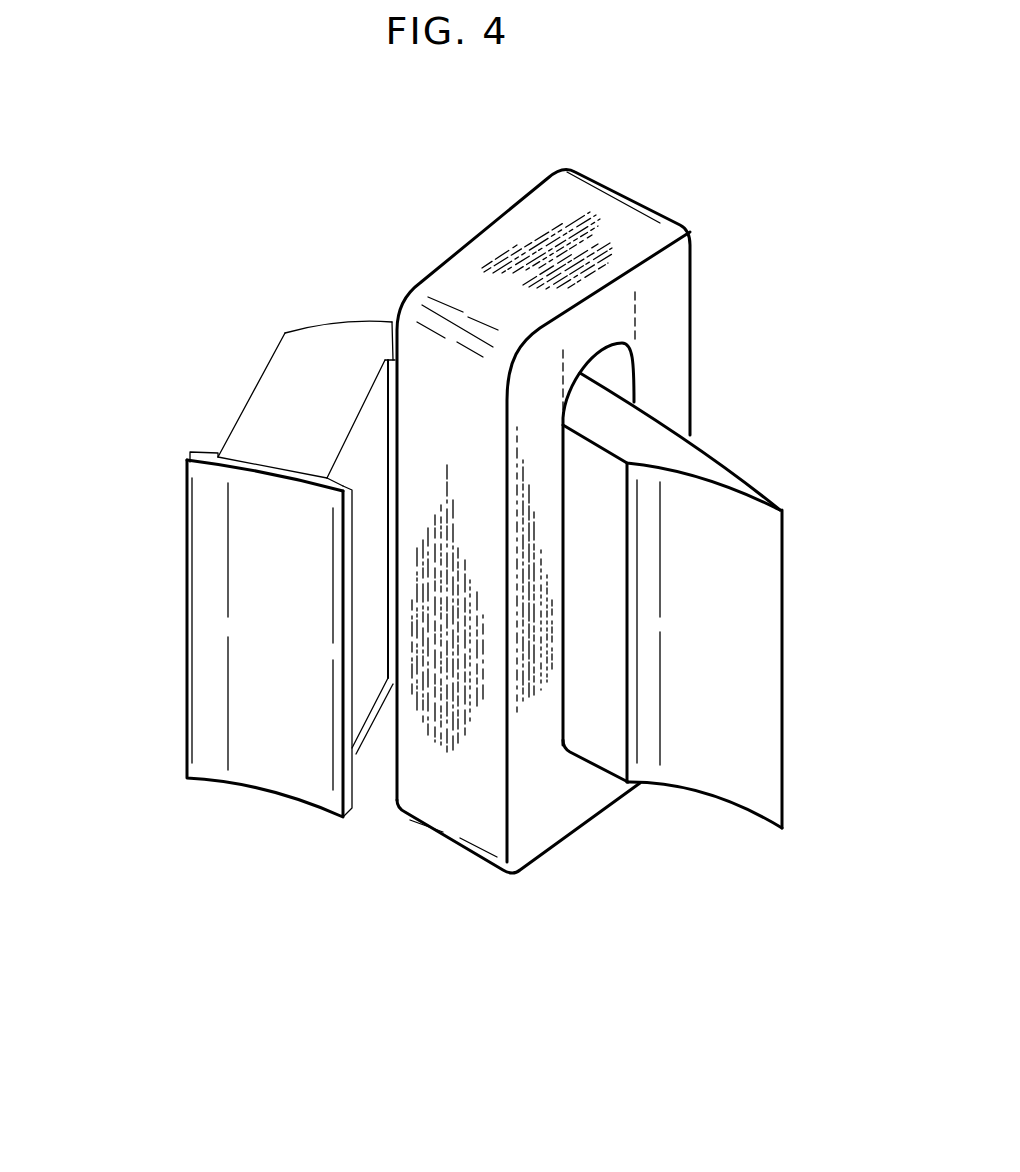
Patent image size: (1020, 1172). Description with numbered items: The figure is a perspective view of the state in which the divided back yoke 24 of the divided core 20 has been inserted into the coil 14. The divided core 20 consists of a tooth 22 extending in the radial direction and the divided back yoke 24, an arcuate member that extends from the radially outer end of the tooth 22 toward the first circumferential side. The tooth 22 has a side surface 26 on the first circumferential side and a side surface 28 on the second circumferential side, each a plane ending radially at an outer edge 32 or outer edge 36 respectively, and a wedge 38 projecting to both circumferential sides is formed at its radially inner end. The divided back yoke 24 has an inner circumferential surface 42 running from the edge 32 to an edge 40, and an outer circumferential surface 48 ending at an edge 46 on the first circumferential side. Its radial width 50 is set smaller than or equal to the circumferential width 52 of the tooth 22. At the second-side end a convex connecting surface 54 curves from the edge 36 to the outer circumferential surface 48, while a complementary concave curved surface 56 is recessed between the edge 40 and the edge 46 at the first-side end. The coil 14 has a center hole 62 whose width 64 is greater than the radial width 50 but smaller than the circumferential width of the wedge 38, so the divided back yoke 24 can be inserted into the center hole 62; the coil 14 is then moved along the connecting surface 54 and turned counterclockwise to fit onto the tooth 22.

The coil 14 is at (620, 192).
The divided core 20 is at (168, 250).
The tooth 22 is at (226, 553).
The divided back yoke 24 is at (722, 639).
The side surface 26 is at (367, 588).
The side surface 28 is at (228, 435).
The radially outer edge 32 is at (387, 387).
The radially outer edge 36 is at (230, 357).
The wedge 38 is at (186, 455).
The edge 40 is at (628, 677).
The inner circumferential surface 42 is at (610, 708).
The edge 46 is at (783, 720).
The outer circumferential surface 48 is at (733, 465).
The radial width 50 is at (587, 433).
The circumferential width 52 is at (365, 400).
The connecting surface 54 is at (328, 318).
The concave curved surface 56 is at (715, 595).
The center hole 62 is at (623, 366).
The width 64 is at (635, 297).